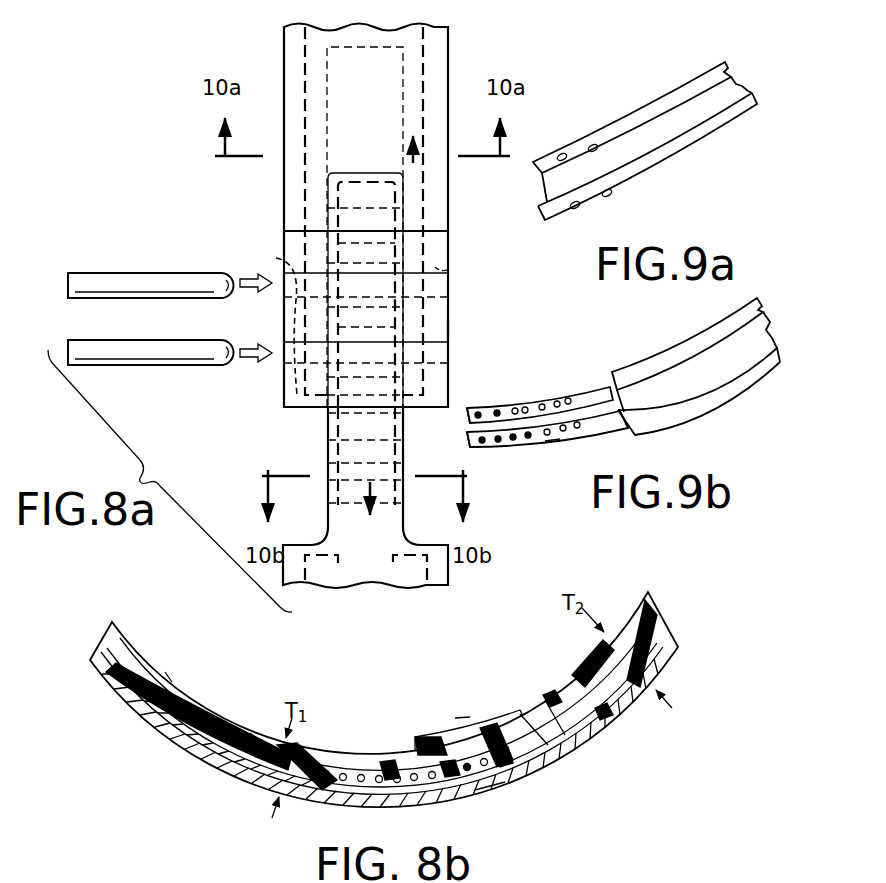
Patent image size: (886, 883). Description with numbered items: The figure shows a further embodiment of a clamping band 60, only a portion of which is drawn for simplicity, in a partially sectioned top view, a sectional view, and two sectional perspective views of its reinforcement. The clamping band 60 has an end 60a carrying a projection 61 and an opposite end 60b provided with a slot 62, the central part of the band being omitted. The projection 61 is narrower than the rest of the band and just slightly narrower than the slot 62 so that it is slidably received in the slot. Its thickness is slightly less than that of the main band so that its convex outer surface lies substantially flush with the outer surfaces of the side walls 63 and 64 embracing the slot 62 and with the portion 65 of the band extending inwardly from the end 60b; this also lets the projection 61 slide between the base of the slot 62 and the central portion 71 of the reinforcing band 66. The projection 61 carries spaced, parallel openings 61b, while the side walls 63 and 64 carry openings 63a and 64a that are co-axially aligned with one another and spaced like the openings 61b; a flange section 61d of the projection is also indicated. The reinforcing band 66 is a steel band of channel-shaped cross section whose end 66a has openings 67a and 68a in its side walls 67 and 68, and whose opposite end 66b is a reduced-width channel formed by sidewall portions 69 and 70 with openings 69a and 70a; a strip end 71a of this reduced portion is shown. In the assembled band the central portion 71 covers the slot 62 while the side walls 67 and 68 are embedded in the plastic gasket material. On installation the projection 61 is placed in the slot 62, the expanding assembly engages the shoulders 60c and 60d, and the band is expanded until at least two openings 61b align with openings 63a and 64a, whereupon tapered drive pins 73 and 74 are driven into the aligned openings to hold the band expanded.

In FIG. 8a, the clamping band 60 is at (498, 296).
In FIG. 8b, the clamping band 60 is at (527, 658).
In FIG. 8b, the end 60a is at (492, 790).
In FIG. 8a, the opposite end 60b is at (453, 331).
In FIG. 8b, the opposite end 60b is at (461, 712).
In FIG. 8b, the shoulder 60c is at (173, 687).
In FIG. 8b, the shoulder 60d is at (415, 737).
In FIG. 8a, the projection 61 is at (318, 440).
In FIG. 8b, the projection 61 is at (502, 773).
In FIG. 8b, the openings 61b is at (418, 780).
In FIG. 8b, the flange section 61d is at (397, 805).
In FIG. 8a, the slot 62 is at (367, 100).
In FIG. 8b, the slot 62 is at (568, 717).
In FIG. 8a, the side wall 63 is at (435, 193).
In FIG. 8a, the openings 63a is at (435, 267).
In FIG. 8a, the side wall 64 is at (295, 192).
In FIG. 8b, the side wall 64 is at (557, 754).
In FIG. 8a, the openings 64a is at (267, 314).
In FIG. 8b, the portion of the clamping band 65 is at (660, 667).
In FIG. 9b, the reinforcing band 66 is at (733, 400).
In FIG. 9a, the end of the reinforcing band 66a is at (635, 190).
In FIG. 9b, the opposite end of reinforcement band 66b is at (553, 445).
In FIG. 9a, the side wall 67 is at (648, 113).
In FIG. 9b, the side wall 67 is at (690, 410).
In FIG. 9a, the openings 67a is at (593, 145).
In FIG. 9a, the side wall 68 is at (672, 163).
In FIG. 9b, the side wall 68 is at (665, 358).
In FIG. 9a, the openings 68a is at (605, 196).
In FIG. 9b, the sidewall portion 69 is at (595, 393).
In FIG. 9b, the openings 69a is at (540, 404).
In FIG. 9b, the sidewall portion 70 is at (597, 423).
In FIG. 9b, the openings 70a is at (525, 439).
In FIG. 9b, the central portion 71 is at (708, 357).
In FIG. 8b, the central portion 71 is at (153, 732).
In FIG. 9b, the strip end 71a is at (468, 437).
In FIG. 8a, the tapered drive pin 73 is at (160, 279).
In FIG. 8a, the tapered drive pin 74 is at (160, 346).